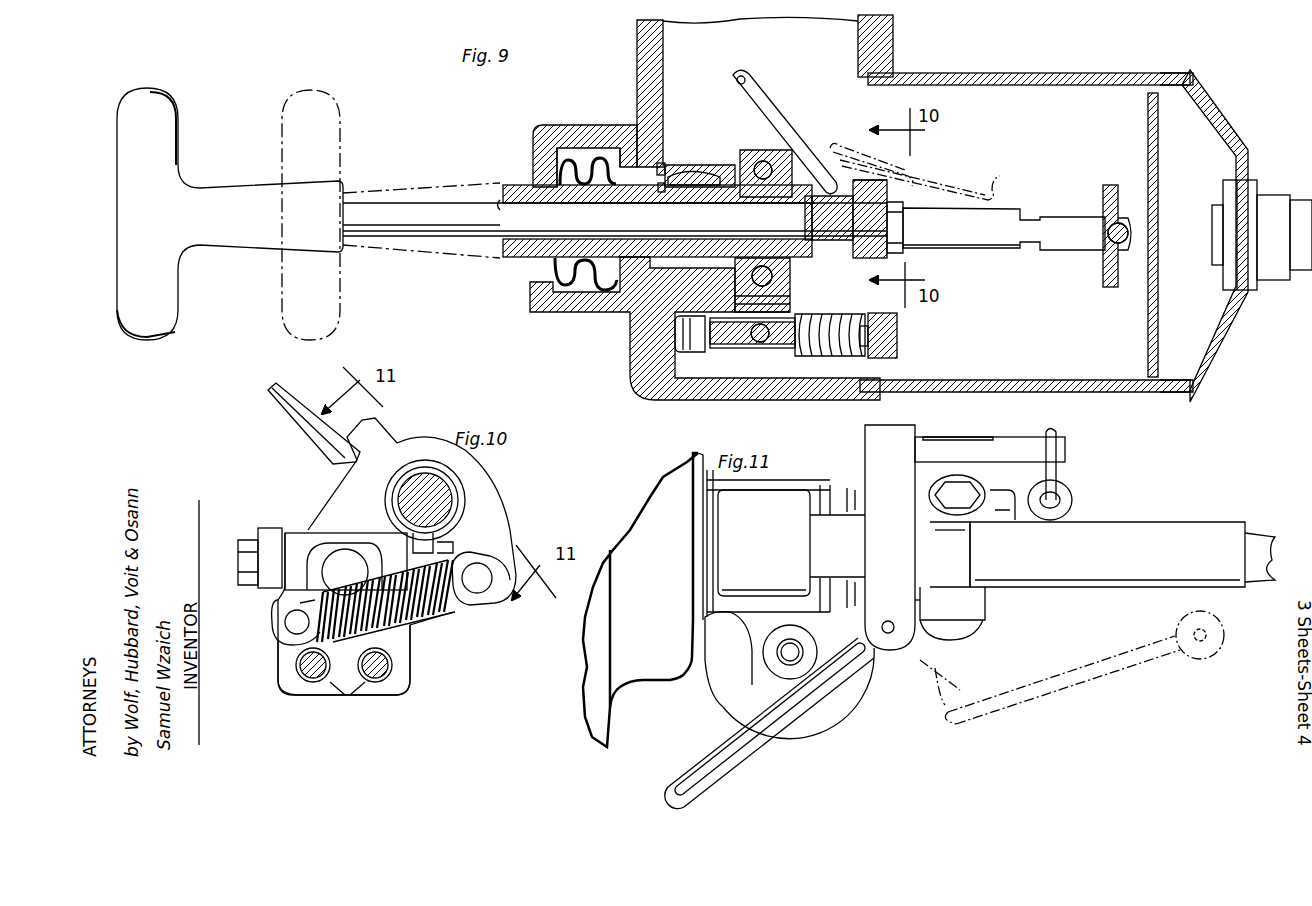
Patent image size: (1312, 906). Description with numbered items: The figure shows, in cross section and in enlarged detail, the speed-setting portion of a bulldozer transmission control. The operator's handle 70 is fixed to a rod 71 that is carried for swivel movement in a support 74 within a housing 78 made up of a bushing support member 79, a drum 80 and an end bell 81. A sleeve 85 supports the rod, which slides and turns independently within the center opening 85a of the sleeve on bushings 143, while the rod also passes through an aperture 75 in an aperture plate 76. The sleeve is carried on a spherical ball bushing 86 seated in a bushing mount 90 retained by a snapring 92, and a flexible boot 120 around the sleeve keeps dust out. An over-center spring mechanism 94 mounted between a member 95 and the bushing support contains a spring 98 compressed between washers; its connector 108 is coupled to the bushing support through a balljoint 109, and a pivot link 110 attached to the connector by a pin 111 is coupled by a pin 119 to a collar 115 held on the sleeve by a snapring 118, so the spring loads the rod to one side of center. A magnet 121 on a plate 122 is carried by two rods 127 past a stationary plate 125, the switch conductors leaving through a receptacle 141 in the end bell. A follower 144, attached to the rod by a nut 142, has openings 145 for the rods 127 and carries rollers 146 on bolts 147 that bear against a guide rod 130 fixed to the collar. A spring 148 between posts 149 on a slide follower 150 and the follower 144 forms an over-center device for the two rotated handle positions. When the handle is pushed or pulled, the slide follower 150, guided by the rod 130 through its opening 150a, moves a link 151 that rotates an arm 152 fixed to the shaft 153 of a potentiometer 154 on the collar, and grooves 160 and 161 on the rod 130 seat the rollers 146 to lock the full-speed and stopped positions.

In FIG. 9, the handle 70 is at (160, 92).
In FIG. 9, the rod 71 is at (392, 207).
In FIG. 10, the rod 71 is at (330, 568).
In FIG. 9, the support 74 is at (637, 86).
In FIG. 11, the support 74 is at (590, 684).
In FIG. 9, the aperture 75 is at (545, 165).
In FIG. 9, the aperture plate 76 is at (536, 140).
In FIG. 9, the housing 78 is at (895, 46).
In FIG. 11, the bushing support member 79 is at (820, 488).
In FIG. 9, the drum 80 is at (1082, 75).
In FIG. 9, the end bell 81 is at (1220, 120).
In FIG. 9, the sleeve 85 is at (515, 185).
In FIG. 9, the center opening 85a is at (692, 206).
In FIG. 9, the ball bushing 86 is at (665, 264).
In FIG. 9, the bushing mount 90 is at (668, 166).
In FIG. 9, the snapring 92 is at (688, 172).
In FIG. 9, the over-center spring mechanism 94 is at (813, 362).
In FIG. 9, the member 95 is at (898, 352).
In FIG. 9, the spring 98 is at (832, 352).
In FIG. 9, the connector 108 is at (780, 350).
In FIG. 9, the balljoint 109 is at (690, 352).
In FIG. 9, the pivot link 110 is at (790, 305).
In FIG. 9, the pin 111 is at (760, 345).
In FIG. 9, the collar 115 is at (762, 160).
In FIG. 9, the snapring 118 is at (790, 284).
In FIG. 9, the pin 119 is at (781, 293).
In FIG. 9, the flexible boot 120 is at (576, 160).
In FIG. 9, the magnet 121 is at (1110, 226).
In FIG. 9, the plate 122 is at (1104, 196).
In FIG. 9, the stationary plate 125 is at (1148, 163).
In FIG. 10, the rods 127 is at (296, 664).
In FIG. 10, the guide rod 130 is at (448, 512).
In FIG. 11, the guide rod 130 is at (1185, 522).
In FIG. 9, the receptacle 141 is at (1272, 186).
In FIG. 9, the nut 142 is at (903, 230).
In FIG. 10, the nut 142 is at (348, 532).
In FIG. 9, the bushings 143 is at (503, 206).
In FIG. 9, the follower 144 is at (887, 194).
In FIG. 10, the follower 144 is at (322, 695).
In FIG. 11, the follower 144 is at (980, 612).
In FIG. 10, the openings 145 is at (354, 696).
In FIG. 10, the rollers 146 is at (272, 528).
In FIG. 11, the rollers 146 is at (993, 636).
In FIG. 10, the bolts 147 is at (248, 540).
In FIG. 11, the bolts 147 is at (935, 490).
In FIG. 10, the spring 148 is at (410, 622).
In FIG. 11, the spring 148 is at (1072, 498).
In FIG. 10, the posts 149 is at (290, 620).
In FIG. 11, the posts 149 is at (1065, 458).
In FIG. 9, the slide follower 150 is at (856, 235).
In FIG. 10, the slide follower 150 is at (470, 470).
In FIG. 11, the slide follower 150 is at (905, 642).
In FIG. 10, the opening 150a is at (465, 492).
In FIG. 9, the link 151 is at (790, 140).
In FIG. 10, the link 151 is at (306, 436).
In FIG. 11, the link 151 is at (1090, 700).
In FIG. 9, the arm 152 is at (752, 110).
In FIG. 11, the arm 152 is at (755, 715).
In FIG. 9, the shaft 153 is at (745, 160).
In FIG. 11, the potentiometer 154 is at (818, 725).
In FIG. 11, the groove 160 is at (1252, 534).
In FIG. 10, the groove 161 is at (458, 502).
In FIG. 11, the groove 161 is at (970, 550).